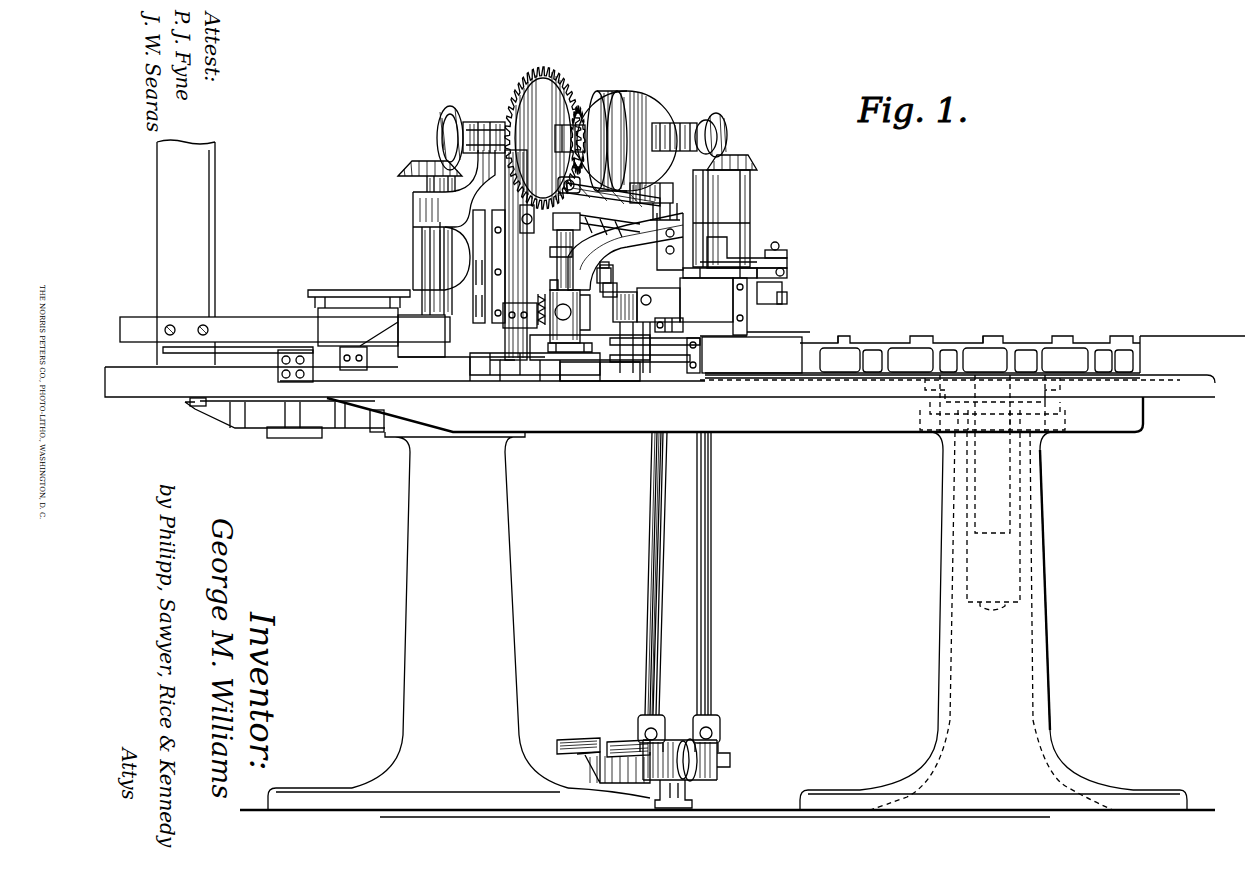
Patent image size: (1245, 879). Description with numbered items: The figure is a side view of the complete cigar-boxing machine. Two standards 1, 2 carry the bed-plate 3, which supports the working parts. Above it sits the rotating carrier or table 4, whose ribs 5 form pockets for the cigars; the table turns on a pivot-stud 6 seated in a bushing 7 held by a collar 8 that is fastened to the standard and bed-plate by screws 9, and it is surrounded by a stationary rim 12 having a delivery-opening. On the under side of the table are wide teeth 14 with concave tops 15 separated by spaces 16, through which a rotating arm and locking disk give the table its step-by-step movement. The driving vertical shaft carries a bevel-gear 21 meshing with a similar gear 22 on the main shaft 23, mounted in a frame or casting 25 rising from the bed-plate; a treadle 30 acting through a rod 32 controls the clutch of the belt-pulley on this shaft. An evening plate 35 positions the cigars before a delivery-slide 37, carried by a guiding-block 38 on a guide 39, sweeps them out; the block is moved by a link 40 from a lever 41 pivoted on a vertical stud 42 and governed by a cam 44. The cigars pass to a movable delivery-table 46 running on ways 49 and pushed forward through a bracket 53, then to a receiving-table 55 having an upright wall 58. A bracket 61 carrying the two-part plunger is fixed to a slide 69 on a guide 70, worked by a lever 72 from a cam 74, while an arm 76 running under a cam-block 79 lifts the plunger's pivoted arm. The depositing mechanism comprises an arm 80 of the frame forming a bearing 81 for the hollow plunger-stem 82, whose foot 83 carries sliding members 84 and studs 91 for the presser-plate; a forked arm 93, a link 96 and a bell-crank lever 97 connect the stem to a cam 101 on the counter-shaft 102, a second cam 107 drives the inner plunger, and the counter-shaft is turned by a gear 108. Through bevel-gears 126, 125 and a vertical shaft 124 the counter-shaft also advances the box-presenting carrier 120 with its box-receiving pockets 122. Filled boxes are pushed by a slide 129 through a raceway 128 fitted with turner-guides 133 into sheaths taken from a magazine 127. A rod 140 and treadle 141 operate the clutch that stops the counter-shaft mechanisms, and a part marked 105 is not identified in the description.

The standard 1 is at (993, 621).
The standard 2 is at (727, 624).
The bed-plate 3 is at (660, 402).
The rotating carrier 4 is at (970, 333).
The ribs 5 is at (1008, 328).
The pivot-stud 6 is at (1010, 545).
The bushing 7 is at (1020, 507).
The collar 8 is at (1065, 408).
The screws 9 is at (1068, 386).
The stationary rim 12 is at (973, 354).
The wide teeth 14 is at (1105, 372).
The concave tops 15 is at (954, 360).
The spaces 16 is at (868, 375).
The bevel-gear 21 is at (757, 163).
The bevel-gear 22 is at (722, 113).
The main shaft 23 is at (728, 134).
The frame or casting 25 is at (565, 220).
The treadle 30 is at (686, 773).
The rod 32 is at (712, 525).
The plate 35 is at (770, 330).
The delivery-slide 37 is at (748, 327).
The guiding-block 38 is at (706, 300).
The guide 39 is at (658, 305).
The link 40 is at (720, 281).
The lever 41 is at (787, 262).
The vertical stud 42 is at (750, 223).
The cam 44 is at (787, 254).
The delivery-table 46 is at (655, 344).
The ways 49 is at (672, 385).
The bracket 53 is at (678, 318).
The receiving-table 55 is at (558, 360).
The upright wall 58 is at (590, 358).
The bracket 61 is at (580, 328).
The slide 69 is at (611, 276).
The guide 70 is at (617, 290).
The lever 72 is at (787, 276).
The cam 74 is at (788, 296).
The arm 76 is at (520, 323).
The cam-block 79 is at (533, 309).
The arm 80 is at (625, 251).
The bearing 81 is at (550, 268).
The hollow plunger-stem 82 is at (555, 232).
The foot 83 is at (580, 310).
The sliding members 84 is at (562, 149).
The studs 91 is at (542, 286).
The forked arm 93 is at (622, 238).
The link 96 is at (668, 211).
The bell-crank lever 97 is at (665, 190).
The cam 101 is at (627, 141).
The counter-shaft 102 is at (750, 144).
The arm 105 is at (613, 201).
The cam 107 is at (618, 96).
The gear 108 is at (548, 72).
The rotating carrier 120 is at (490, 372).
The box-receiving pockets 122 is at (545, 375).
The vertical shaft 124 is at (422, 259).
The bevel-gear 125 is at (400, 164).
The bevel-gear 126 is at (444, 116).
The magazine 127 is at (186, 252).
The raceway 128 is at (238, 364).
The slide 129 is at (359, 330).
The turner-guides 133 is at (280, 344).
The rod 140 is at (652, 601).
The treadle 141 is at (600, 733).